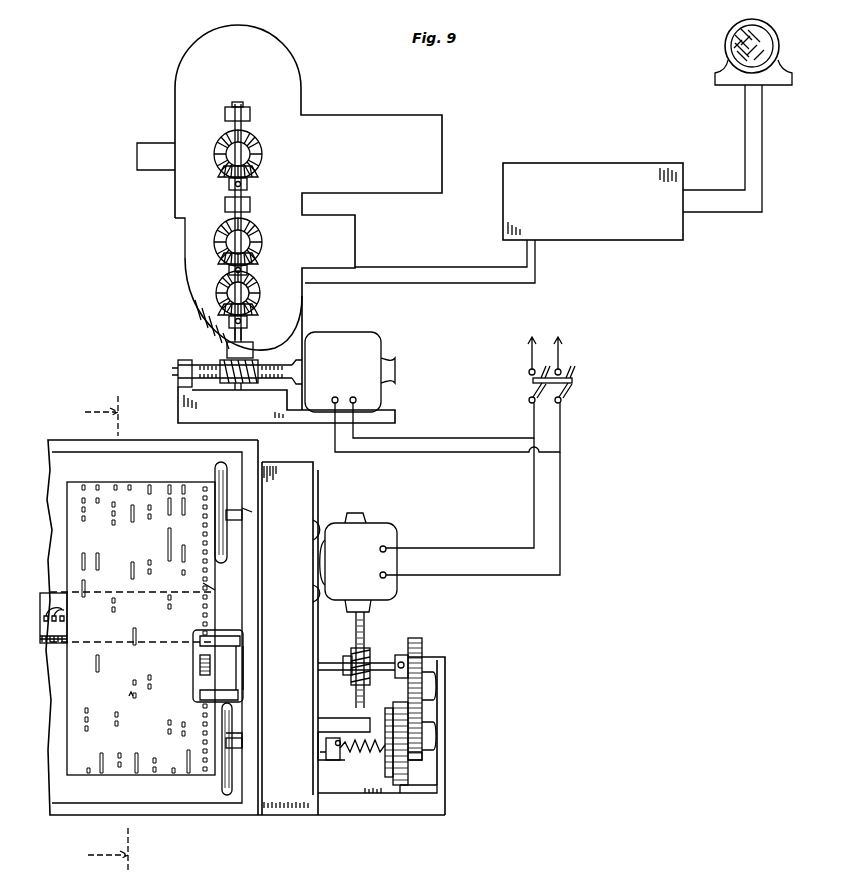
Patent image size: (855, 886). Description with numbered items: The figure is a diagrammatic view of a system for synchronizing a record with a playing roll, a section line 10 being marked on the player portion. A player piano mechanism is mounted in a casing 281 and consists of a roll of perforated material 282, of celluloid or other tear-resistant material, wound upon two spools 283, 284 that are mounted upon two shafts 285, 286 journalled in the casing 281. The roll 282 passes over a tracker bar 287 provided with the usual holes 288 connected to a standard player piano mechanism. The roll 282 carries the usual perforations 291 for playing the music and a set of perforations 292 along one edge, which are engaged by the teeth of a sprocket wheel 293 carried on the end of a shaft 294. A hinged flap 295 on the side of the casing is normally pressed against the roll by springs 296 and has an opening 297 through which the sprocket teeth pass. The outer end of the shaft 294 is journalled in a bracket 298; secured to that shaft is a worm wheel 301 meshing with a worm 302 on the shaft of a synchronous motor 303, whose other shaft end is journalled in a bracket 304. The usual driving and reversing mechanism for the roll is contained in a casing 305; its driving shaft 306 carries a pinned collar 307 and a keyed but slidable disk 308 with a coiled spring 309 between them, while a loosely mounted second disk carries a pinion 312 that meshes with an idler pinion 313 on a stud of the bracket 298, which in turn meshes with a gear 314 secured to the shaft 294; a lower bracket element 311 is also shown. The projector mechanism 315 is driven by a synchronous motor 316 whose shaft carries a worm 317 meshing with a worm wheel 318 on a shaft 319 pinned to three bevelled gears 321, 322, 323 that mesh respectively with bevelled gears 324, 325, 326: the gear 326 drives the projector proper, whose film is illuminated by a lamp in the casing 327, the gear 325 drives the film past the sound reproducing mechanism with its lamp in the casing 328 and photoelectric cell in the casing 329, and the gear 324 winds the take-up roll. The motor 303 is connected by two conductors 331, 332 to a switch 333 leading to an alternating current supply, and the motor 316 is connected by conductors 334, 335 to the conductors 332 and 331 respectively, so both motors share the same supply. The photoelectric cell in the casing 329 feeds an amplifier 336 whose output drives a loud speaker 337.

The section line 10 is at (93, 633).
The casing 281 is at (203, 805).
The roll of perforated material 282 is at (122, 748).
The spool 283 is at (228, 543).
The spool 284 is at (233, 782).
The shaft 285 is at (235, 525).
The shaft 286 is at (240, 748).
The tracker bar 287 is at (58, 642).
The holes 288 is at (65, 607).
The perforations 291 is at (116, 716).
The perforations 292 is at (220, 578).
The sprocket wheel 293 is at (244, 671).
The shaft 294 is at (318, 662).
The hinged flap 295 is at (198, 686).
The springs 296 is at (205, 640).
The opening 297 is at (200, 664).
The bracket 298 is at (446, 686).
The worm wheel 301 is at (368, 628).
The worm 302 is at (370, 652).
The synchronous motor 303 is at (358, 562).
The bracket 304 is at (346, 722).
The casing 305 is at (313, 480).
The driving shaft 306 is at (355, 760).
The collar 307 is at (340, 762).
The disk 308 is at (390, 800).
The coiled spring 309 is at (362, 755).
The bottom bracket 311 is at (438, 789).
The pinion 312 is at (412, 754).
The idler pinion 313 is at (425, 712).
The gear 314 is at (421, 645).
The projector mechanism 315 is at (289, 217).
The synchronous motor 316 is at (350, 372).
The worm 317 is at (228, 384).
The worm wheel 318 is at (262, 361).
The shaft 319 is at (244, 337).
The bevelled gear 321 is at (257, 308).
The bevelled gear 322 is at (258, 263).
The bevelled gear 323 is at (258, 172).
The bevelled gear 324 is at (260, 286).
The bevelled gear 325 is at (258, 240).
The bevelled gear 326 is at (256, 148).
The casing 327 is at (443, 133).
The casing 328 is at (356, 238).
The casing 329 is at (185, 292).
The conductor 331 is at (500, 549).
The conductor 332 is at (466, 576).
The switch 333 is at (573, 381).
The conductor 334 is at (455, 453).
The conductor 335 is at (490, 439).
The amplifier 336 is at (630, 232).
The loud speaker 337 is at (716, 64).